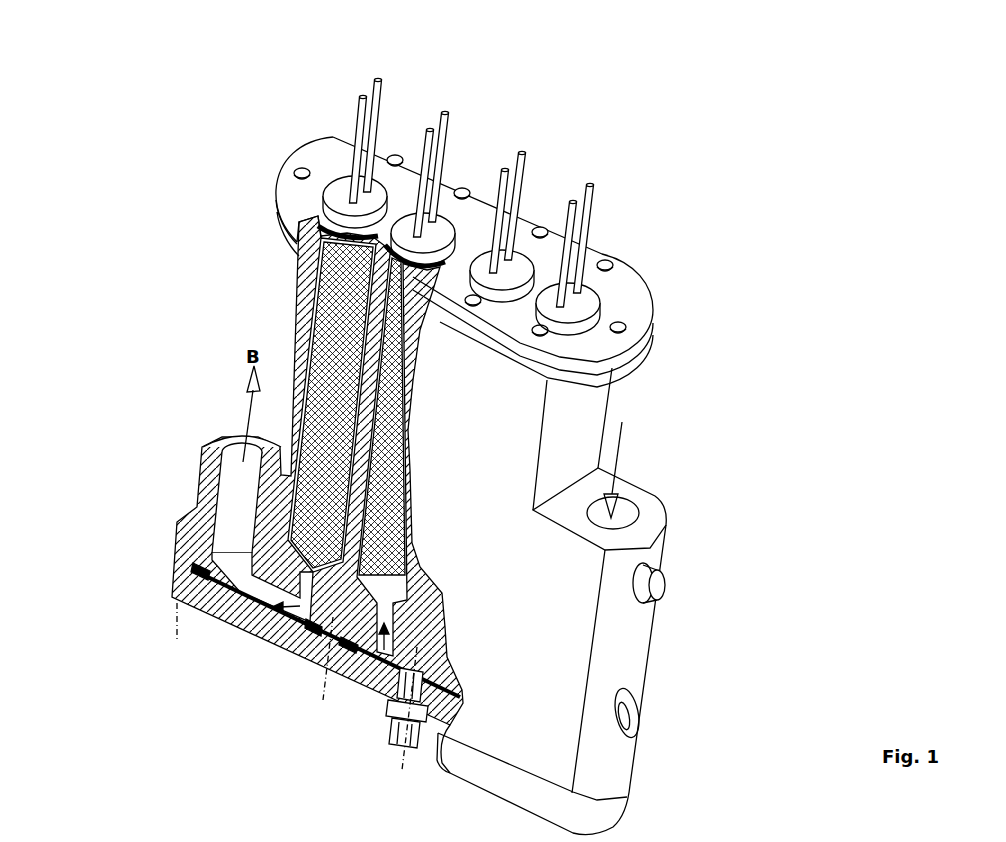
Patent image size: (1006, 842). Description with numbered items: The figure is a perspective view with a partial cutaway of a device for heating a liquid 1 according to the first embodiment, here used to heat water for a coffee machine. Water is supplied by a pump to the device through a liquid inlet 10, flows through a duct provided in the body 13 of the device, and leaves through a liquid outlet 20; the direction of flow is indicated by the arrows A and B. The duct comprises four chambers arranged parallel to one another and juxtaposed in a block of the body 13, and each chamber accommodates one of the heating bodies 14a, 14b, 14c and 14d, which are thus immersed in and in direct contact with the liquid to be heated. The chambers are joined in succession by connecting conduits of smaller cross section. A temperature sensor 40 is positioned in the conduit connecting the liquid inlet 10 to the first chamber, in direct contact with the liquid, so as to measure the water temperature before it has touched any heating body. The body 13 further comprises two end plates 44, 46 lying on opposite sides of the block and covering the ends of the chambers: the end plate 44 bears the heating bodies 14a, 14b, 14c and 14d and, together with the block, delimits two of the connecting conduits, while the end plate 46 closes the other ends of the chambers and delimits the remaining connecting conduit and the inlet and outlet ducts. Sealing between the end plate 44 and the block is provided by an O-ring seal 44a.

The device for heating a liquid 1 is at (168, 430).
The liquid inlet 10 is at (653, 500).
The body 13 is at (297, 330).
The heating body 14a is at (593, 293).
The heating body 14b is at (522, 272).
The heating body 14c is at (443, 205).
The heating body 14d is at (337, 197).
The liquid outlet 20 is at (242, 453).
The temperature sensor 40 is at (667, 587).
The end plate 44 is at (630, 310).
The O-ring seal 44a is at (330, 252).
The end plate 46 is at (220, 617).